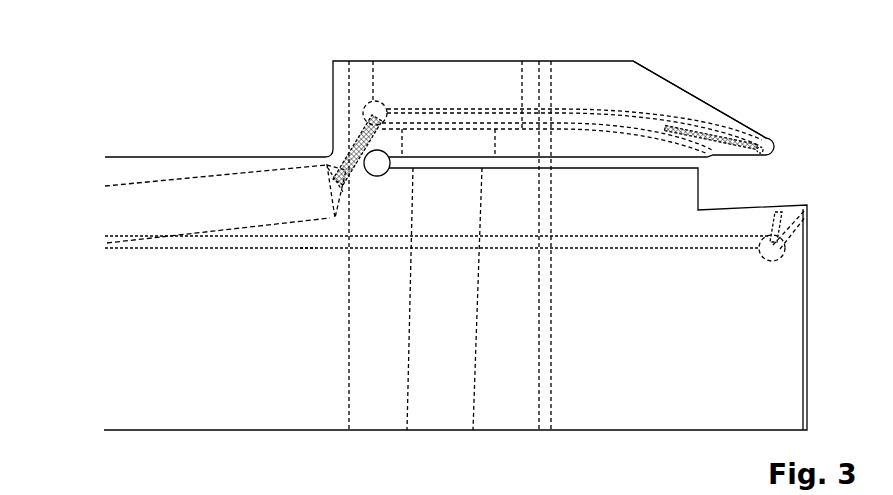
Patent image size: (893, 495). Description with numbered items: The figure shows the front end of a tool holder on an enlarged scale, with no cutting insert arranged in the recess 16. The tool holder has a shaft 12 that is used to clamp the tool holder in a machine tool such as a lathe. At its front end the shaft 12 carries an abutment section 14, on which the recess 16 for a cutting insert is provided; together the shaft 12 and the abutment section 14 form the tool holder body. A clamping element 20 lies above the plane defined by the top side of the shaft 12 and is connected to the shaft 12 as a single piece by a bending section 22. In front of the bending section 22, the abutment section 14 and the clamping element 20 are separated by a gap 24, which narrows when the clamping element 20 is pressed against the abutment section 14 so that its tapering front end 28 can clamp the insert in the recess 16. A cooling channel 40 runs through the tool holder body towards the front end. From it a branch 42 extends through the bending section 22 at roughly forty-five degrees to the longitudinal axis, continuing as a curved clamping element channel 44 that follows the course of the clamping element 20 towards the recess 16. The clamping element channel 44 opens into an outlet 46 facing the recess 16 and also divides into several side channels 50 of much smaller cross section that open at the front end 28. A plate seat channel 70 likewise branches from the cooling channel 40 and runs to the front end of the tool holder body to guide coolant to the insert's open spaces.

The shaft 12 is at (145, 344).
The abutment section 14 is at (788, 298).
The recess 16 is at (770, 205).
The clamping element 20 is at (533, 66).
The bending section 22 is at (336, 155).
The gap 24 is at (636, 166).
The front end 28 is at (718, 117).
The cooling channel 40 is at (145, 224).
The branch 42 is at (352, 140).
The clamping element channel 44 is at (593, 118).
The outlet 46 is at (728, 157).
The side channels 50 is at (748, 140).
The plate seat channel 70 is at (308, 247).